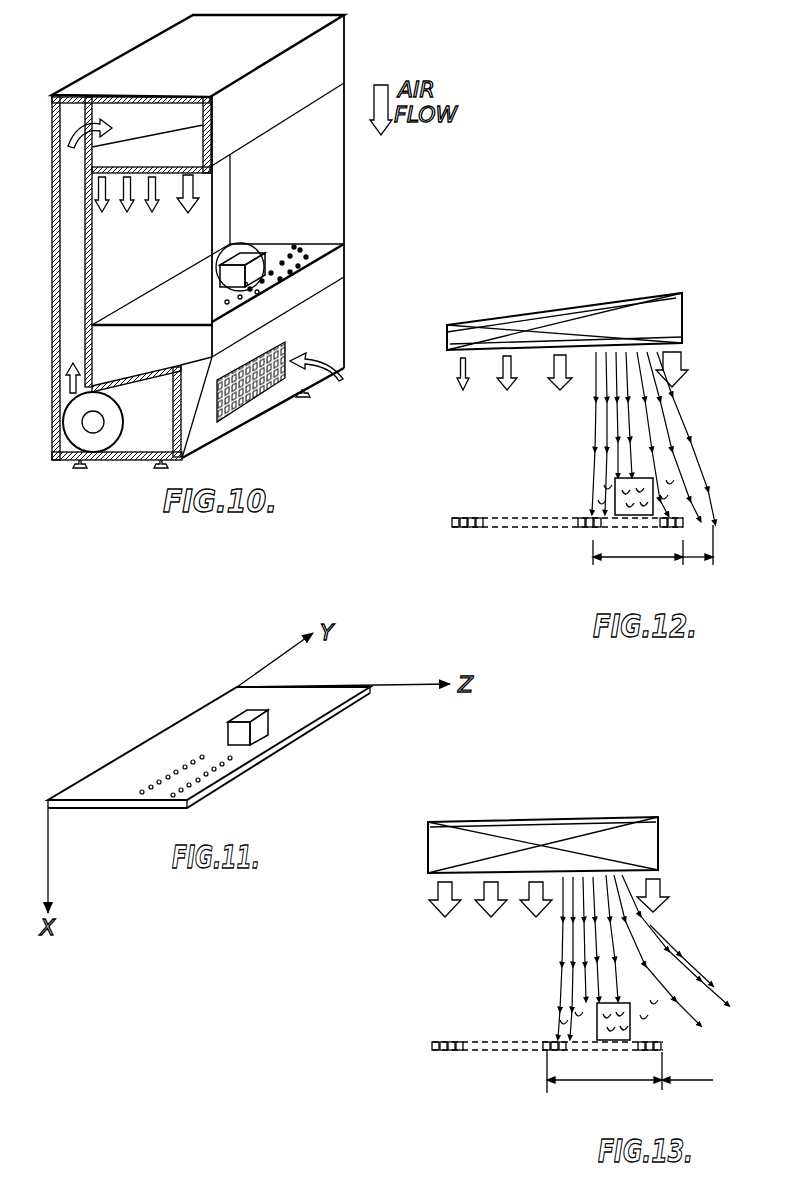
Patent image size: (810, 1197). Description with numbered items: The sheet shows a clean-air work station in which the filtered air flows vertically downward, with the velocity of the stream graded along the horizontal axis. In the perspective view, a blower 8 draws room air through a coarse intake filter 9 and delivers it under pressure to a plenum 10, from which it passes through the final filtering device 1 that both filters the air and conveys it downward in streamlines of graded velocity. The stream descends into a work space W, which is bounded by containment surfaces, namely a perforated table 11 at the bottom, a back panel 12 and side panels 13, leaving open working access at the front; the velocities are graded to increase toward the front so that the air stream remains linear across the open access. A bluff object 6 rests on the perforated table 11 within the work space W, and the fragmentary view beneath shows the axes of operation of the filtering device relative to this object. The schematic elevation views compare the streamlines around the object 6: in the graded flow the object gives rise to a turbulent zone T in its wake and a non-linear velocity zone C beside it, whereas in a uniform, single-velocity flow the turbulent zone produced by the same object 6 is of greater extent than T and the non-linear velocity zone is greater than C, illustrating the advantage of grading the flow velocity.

In FIG. 10, the filtering device 1 is at (92, 157).
In FIG. 10, the bluff object 6 is at (268, 259).
In FIG. 11, the bluff object 6 is at (248, 727).
In FIG. 12, the bluff object 6 is at (615, 490).
In FIG. 13, the bluff object 6 is at (597, 1013).
In FIG. 10, the blower 8 is at (76, 404).
In FIG. 10, the intake filter 9 is at (218, 412).
In FIG. 10, the plenum 10 is at (67, 272).
In FIG. 10, the perforated table 11 is at (333, 253).
In FIG. 10, the back panel 12 is at (228, 193).
In FIG. 10, the side panels 13 is at (347, 102).
In FIG. 10, the work space W is at (318, 193).
In FIG. 12, the turbulent zone T is at (643, 558).
In FIG. 13, the turbulent zone T is at (595, 1083).
In FIG. 12, the non-linear velocity zone C is at (700, 563).
In FIG. 13, the non-linear velocity zone C is at (700, 1083).